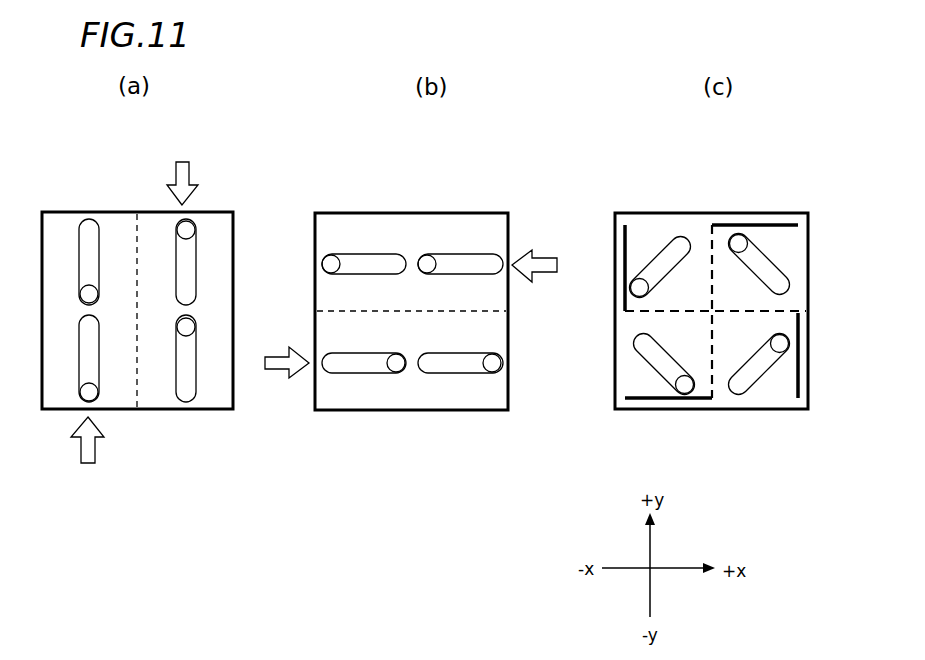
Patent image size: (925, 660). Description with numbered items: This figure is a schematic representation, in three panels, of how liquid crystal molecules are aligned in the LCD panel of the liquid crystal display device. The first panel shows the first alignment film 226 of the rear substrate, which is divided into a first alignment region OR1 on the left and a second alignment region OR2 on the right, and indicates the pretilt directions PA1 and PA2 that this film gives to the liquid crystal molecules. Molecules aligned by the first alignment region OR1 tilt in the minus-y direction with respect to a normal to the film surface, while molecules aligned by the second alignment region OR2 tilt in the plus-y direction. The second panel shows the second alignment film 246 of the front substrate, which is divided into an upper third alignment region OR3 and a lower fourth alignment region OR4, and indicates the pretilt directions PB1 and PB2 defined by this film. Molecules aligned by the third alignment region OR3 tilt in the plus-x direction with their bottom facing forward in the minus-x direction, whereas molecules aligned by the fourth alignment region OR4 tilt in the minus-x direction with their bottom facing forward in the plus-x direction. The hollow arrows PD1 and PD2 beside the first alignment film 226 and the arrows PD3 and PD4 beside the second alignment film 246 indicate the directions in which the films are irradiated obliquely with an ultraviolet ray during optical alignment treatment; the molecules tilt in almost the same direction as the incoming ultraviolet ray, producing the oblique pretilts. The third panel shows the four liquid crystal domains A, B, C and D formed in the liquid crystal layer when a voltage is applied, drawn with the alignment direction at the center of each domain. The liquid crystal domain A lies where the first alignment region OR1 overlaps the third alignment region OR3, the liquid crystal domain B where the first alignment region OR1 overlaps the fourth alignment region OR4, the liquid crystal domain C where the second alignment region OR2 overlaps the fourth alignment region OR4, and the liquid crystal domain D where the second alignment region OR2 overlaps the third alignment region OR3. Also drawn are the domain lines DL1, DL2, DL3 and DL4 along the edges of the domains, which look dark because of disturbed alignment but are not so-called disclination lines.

The first alignment film 226 is at (230, 216).
The second alignment film 246 is at (500, 222).
The pretilt direction PA1 is at (87, 232).
The pretilt direction PA2 is at (187, 262).
The pretilt direction PB1 is at (375, 263).
The pretilt direction PB2 is at (368, 364).
The ultraviolet irradiation direction arrow PD1 is at (87, 452).
The ultraviolet irradiation direction arrow PD2 is at (186, 169).
The ultraviolet irradiation direction arrow PD3 is at (534, 255).
The ultraviolet irradiation direction arrow PD4 is at (286, 373).
The first alignment region OR1 is at (53, 409).
The second alignment region OR2 is at (213, 402).
The third alignment region OR3 is at (498, 300).
The fourth alignment region OR4 is at (500, 393).
The domain line DL1 is at (621, 232).
The domain line DL2 is at (650, 400).
The domain line DL3 is at (800, 385).
The domain line DL4 is at (745, 225).
The liquid crystal domain A is at (659, 266).
The liquid crystal domain B is at (663, 363).
The liquid crystal domain C is at (758, 363).
The liquid crystal domain D is at (758, 263).